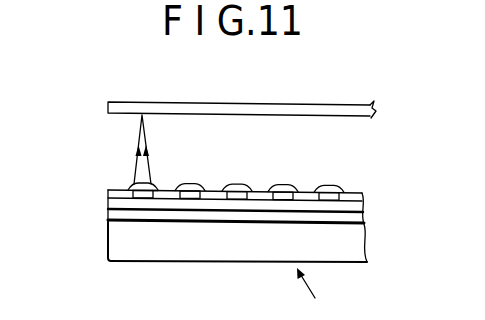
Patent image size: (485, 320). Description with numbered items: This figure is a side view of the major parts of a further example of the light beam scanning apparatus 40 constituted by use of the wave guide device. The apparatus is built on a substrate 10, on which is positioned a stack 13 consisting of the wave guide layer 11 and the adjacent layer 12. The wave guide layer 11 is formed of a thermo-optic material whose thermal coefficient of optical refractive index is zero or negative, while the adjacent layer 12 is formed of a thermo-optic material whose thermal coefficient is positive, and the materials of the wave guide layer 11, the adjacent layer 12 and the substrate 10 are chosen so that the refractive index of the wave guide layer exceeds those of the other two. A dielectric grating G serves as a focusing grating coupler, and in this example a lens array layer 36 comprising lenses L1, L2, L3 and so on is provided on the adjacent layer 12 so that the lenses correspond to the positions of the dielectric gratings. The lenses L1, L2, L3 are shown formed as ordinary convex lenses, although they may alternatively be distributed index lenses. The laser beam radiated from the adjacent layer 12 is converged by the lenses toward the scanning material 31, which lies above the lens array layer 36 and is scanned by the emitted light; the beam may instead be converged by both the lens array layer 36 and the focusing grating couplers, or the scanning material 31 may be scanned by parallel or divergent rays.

The substrate 10 is at (128, 236).
The wave guide layer 11 is at (108, 214).
The adjacent layer 12 is at (108, 200).
The stack 13 is at (58, 188).
The scanning material 31 is at (272, 100).
The lens array layer 36 is at (307, 190).
The light beam scanning apparatus 40 is at (324, 292).
The lens L1 is at (133, 185).
The lens L2 is at (182, 184).
The lens L3 is at (242, 184).
The dielectric grating G is at (153, 188).